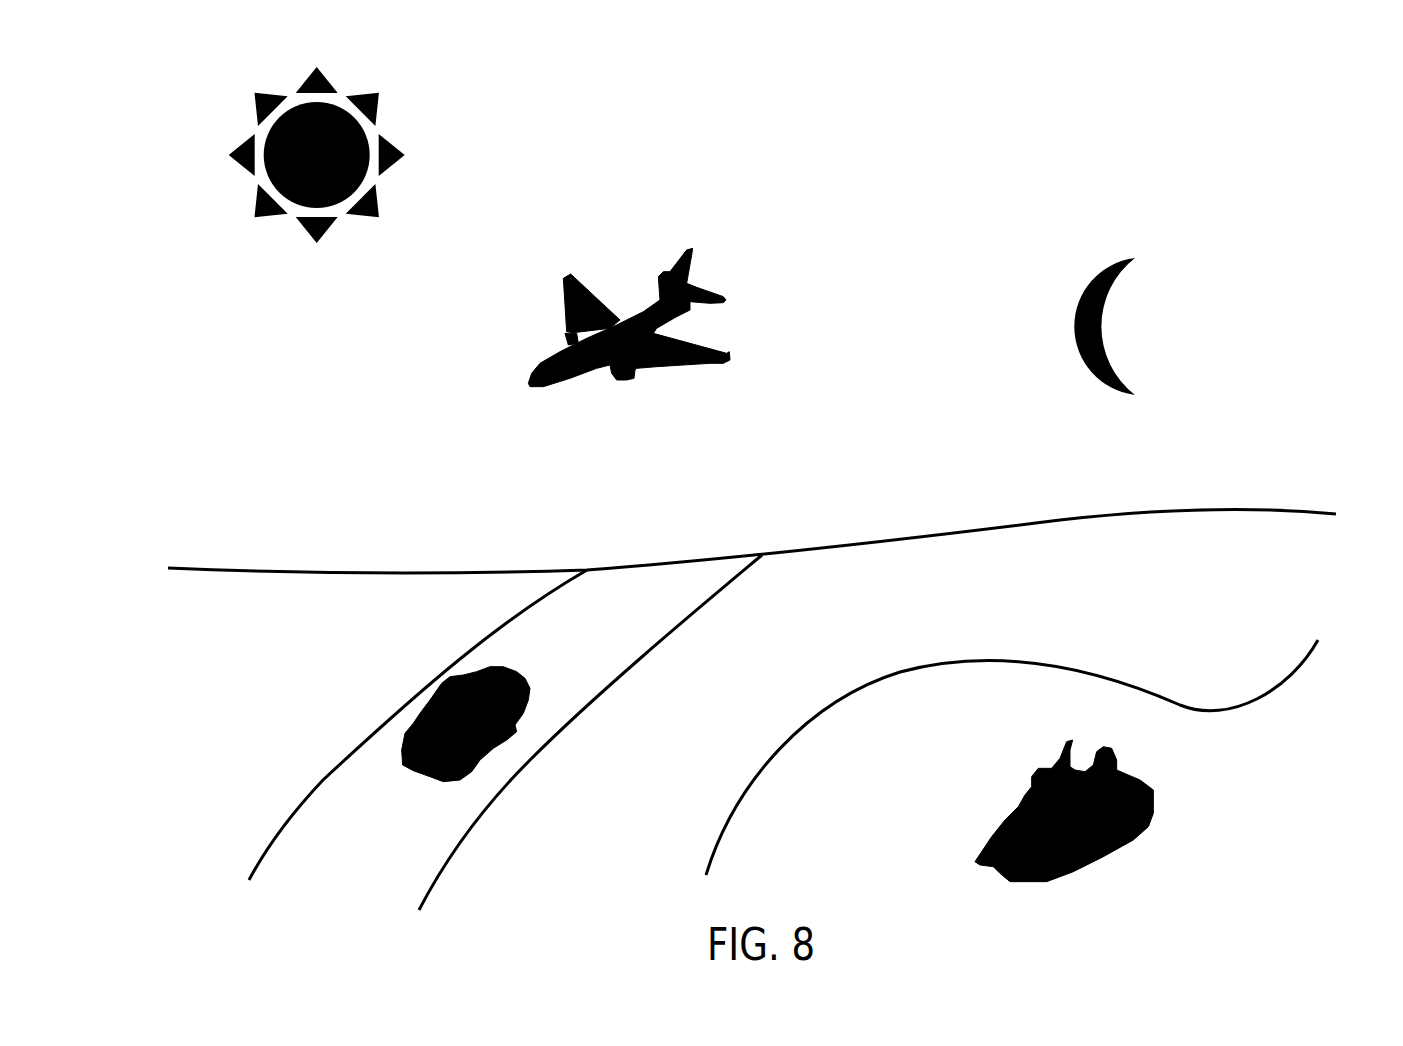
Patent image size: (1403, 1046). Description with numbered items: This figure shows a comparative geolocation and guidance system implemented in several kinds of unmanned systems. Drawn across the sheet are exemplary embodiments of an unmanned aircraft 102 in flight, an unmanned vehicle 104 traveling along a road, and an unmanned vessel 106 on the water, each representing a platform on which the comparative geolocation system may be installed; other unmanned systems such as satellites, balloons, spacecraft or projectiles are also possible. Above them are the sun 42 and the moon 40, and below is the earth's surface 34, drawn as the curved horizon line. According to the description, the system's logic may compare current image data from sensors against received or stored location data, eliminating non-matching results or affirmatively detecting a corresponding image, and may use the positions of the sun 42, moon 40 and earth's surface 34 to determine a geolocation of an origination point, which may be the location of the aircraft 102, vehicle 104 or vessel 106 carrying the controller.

The sun 42 is at (384, 72).
The unmanned aircraft 102 is at (611, 232).
The moon 40 is at (1082, 252).
The earth's surface 34 is at (1205, 497).
The unmanned vehicle 104 is at (513, 638).
The unmanned vessel 106 is at (1046, 729).